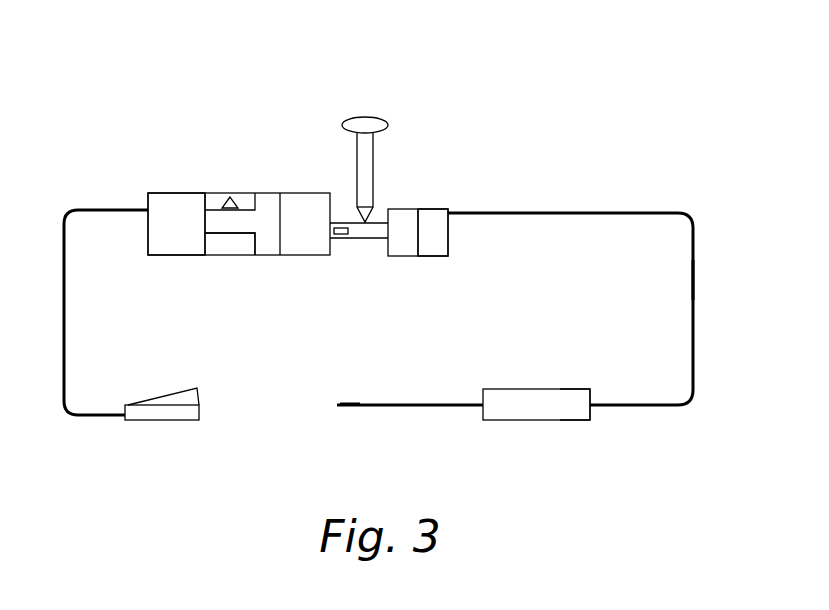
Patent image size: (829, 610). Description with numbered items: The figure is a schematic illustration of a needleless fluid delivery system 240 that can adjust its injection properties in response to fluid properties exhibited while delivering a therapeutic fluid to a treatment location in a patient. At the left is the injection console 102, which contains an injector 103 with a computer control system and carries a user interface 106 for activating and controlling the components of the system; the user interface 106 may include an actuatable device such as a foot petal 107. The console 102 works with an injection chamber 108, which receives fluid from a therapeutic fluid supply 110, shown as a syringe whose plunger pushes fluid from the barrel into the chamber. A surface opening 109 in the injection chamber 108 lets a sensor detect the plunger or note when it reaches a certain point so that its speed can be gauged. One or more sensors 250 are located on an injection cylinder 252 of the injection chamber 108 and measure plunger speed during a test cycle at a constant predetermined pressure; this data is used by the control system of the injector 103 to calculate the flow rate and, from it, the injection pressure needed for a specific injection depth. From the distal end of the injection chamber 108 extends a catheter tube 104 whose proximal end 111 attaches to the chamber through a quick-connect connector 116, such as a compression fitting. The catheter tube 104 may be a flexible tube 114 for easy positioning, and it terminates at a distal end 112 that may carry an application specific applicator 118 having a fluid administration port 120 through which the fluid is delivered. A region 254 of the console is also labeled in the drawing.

The needleless fluid delivery system 240 is at (433, 102).
The injection console 102 is at (228, 255).
The injector 103 is at (180, 193).
The catheter tube 104 is at (619, 213).
The user interface 106 is at (162, 420).
The foot petal 107 is at (172, 392).
The injection chamber 108 is at (348, 240).
The surface opening 109 is at (341, 228).
The therapeutic fluid supply 110 is at (357, 160).
The proximal end 111 is at (457, 213).
The distal end 112 is at (590, 410).
The flexible tube 114 is at (695, 272).
The connector 116 is at (433, 209).
The applicator 118 is at (530, 420).
The fluid administration port 120 is at (337, 403).
The sensor 250 is at (240, 193).
The injection cylinder 252 is at (215, 255).
The housing cavity 254 is at (170, 230).